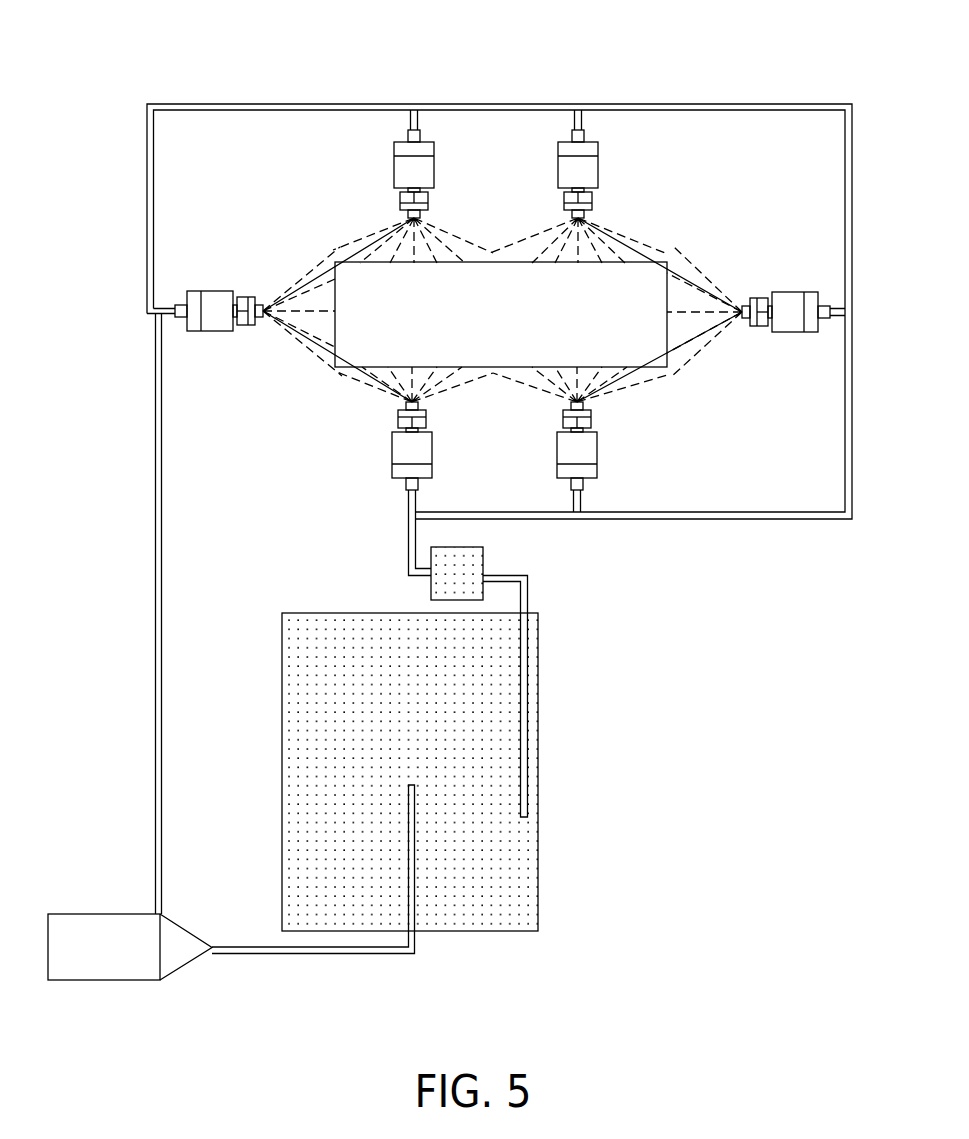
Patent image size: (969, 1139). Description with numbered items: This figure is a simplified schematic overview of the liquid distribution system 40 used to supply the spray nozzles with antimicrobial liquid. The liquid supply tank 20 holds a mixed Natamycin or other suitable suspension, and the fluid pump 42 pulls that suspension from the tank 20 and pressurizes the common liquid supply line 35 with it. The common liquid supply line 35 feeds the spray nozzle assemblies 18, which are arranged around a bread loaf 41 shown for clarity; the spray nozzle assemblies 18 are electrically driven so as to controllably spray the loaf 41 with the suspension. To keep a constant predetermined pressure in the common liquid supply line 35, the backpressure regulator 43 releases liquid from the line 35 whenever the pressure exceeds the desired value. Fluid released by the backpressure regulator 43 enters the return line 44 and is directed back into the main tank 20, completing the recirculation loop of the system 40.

The liquid distribution system 40 is at (183, 73).
The spray nozzle assemblies 18 is at (575, 448).
The bread loaf 41 is at (375, 333).
The common liquid supply line 35 is at (852, 408).
The backpressure regulator 43 is at (438, 570).
The return line 44 is at (523, 602).
The liquid supply tank 20 is at (485, 853).
The fluid pump 42 is at (122, 940).